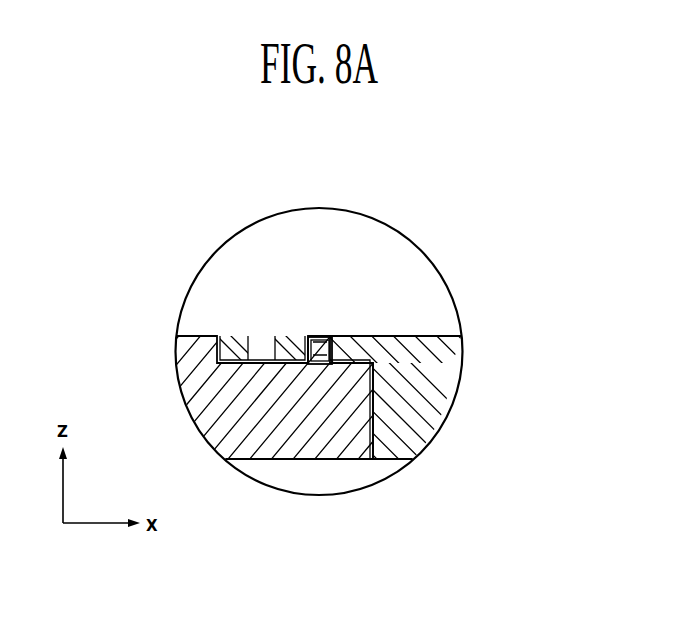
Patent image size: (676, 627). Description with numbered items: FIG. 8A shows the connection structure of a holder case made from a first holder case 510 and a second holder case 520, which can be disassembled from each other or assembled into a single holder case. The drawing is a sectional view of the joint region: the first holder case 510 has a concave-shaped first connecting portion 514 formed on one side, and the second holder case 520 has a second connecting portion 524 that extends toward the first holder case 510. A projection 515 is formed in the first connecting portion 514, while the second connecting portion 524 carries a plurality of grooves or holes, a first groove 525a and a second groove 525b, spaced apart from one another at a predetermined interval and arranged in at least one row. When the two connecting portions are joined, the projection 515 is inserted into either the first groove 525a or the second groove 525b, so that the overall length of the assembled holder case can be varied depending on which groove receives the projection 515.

The first holder case 510 is at (186, 366).
The second holder case 520 is at (444, 389).
The second connecting portion 524 is at (350, 337).
The first connecting portion 514 is at (288, 363).
The projection 515 is at (317, 352).
The first groove 525a is at (260, 337).
The second groove 525b is at (323, 337).